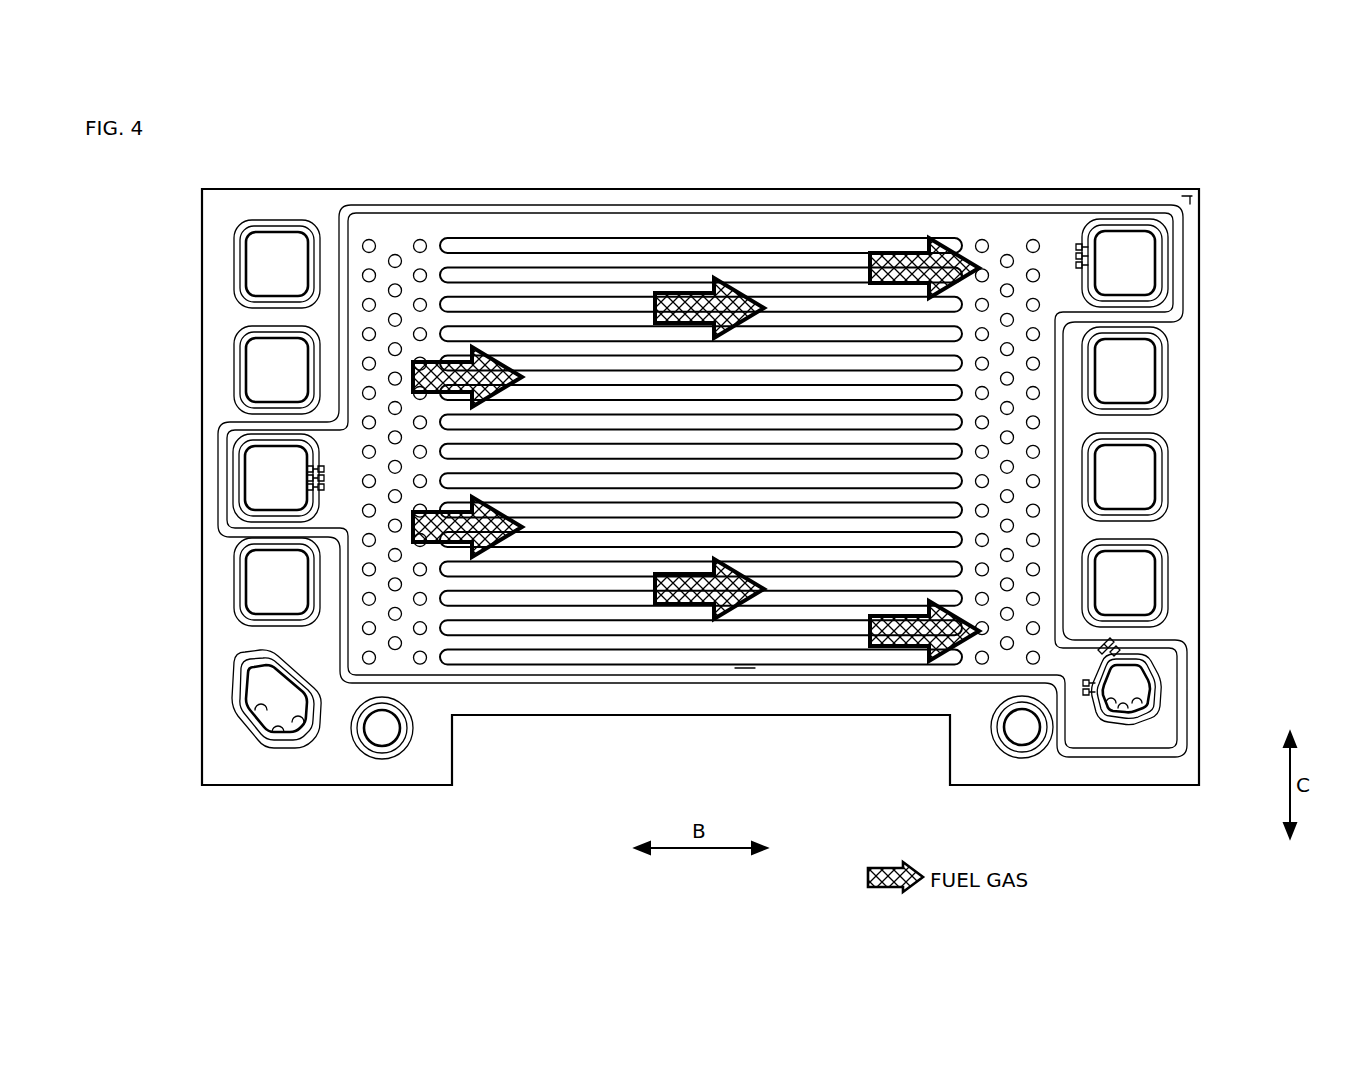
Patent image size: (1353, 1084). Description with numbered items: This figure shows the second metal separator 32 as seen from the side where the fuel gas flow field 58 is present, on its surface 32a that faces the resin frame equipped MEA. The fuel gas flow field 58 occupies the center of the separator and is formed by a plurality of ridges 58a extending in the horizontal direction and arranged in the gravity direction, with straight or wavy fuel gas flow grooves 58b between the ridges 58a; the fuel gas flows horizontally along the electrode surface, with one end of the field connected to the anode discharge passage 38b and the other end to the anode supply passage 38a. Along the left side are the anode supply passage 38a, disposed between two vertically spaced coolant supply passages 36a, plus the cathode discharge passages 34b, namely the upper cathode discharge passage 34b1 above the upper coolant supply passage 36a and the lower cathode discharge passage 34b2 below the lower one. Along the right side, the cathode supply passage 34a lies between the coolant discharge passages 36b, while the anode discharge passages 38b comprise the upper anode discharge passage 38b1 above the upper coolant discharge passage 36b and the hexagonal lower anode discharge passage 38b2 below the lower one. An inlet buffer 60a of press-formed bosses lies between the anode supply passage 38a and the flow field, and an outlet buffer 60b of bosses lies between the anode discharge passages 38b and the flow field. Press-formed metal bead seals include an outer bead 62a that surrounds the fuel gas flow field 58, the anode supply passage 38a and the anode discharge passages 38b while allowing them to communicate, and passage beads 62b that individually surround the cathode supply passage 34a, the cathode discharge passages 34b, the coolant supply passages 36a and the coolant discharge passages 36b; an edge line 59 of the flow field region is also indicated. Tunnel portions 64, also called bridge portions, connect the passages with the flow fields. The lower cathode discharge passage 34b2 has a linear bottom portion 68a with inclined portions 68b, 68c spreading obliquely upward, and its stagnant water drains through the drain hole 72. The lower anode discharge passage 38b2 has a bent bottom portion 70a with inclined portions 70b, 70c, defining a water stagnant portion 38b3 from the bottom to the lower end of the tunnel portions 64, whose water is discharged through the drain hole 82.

The second metal separator 32 is at (274, 152).
The surface 32a is at (968, 240).
The cathode supply passage 34a is at (1140, 493).
The cathode discharge passage 34b is at (263, 281).
The upper cathode discharge passage 34b1 is at (277, 264).
The lower cathode discharge passage 34b2 is at (276, 698).
The coolant supply passage 36a is at (258, 386).
The coolant discharge passage 36b is at (1140, 380).
The anode supply passage 38a is at (258, 488).
The anode discharge passage 38b is at (1138, 263).
The upper anode discharge passage 38b1 is at (1125, 263).
The lower anode discharge passage 38b2 is at (1126, 688).
The water stagnant portion 38b3 is at (1150, 652).
The fuel gas flow field 58 is at (655, 146).
The ridge 58a is at (572, 270).
The fuel gas flow groove 58b is at (631, 288).
The outer edge of flow field 59 is at (745, 668).
The inlet buffer 60a is at (393, 256).
The outlet buffer 60b is at (1009, 256).
The outer bead 62a is at (528, 680).
The passage bead 62b is at (234, 256).
The tunnel portion 64 is at (324, 470).
The bottom portion 68a is at (258, 733).
The inclined portion 68b is at (297, 732).
The inclined portion 68c is at (250, 713).
The bottom portion 70a is at (1126, 712).
The inclined portion 70b is at (1118, 712).
The inclined portion 70c is at (1135, 708).
The drain hole 72 is at (381, 733).
The drain hole 82 is at (1022, 735).